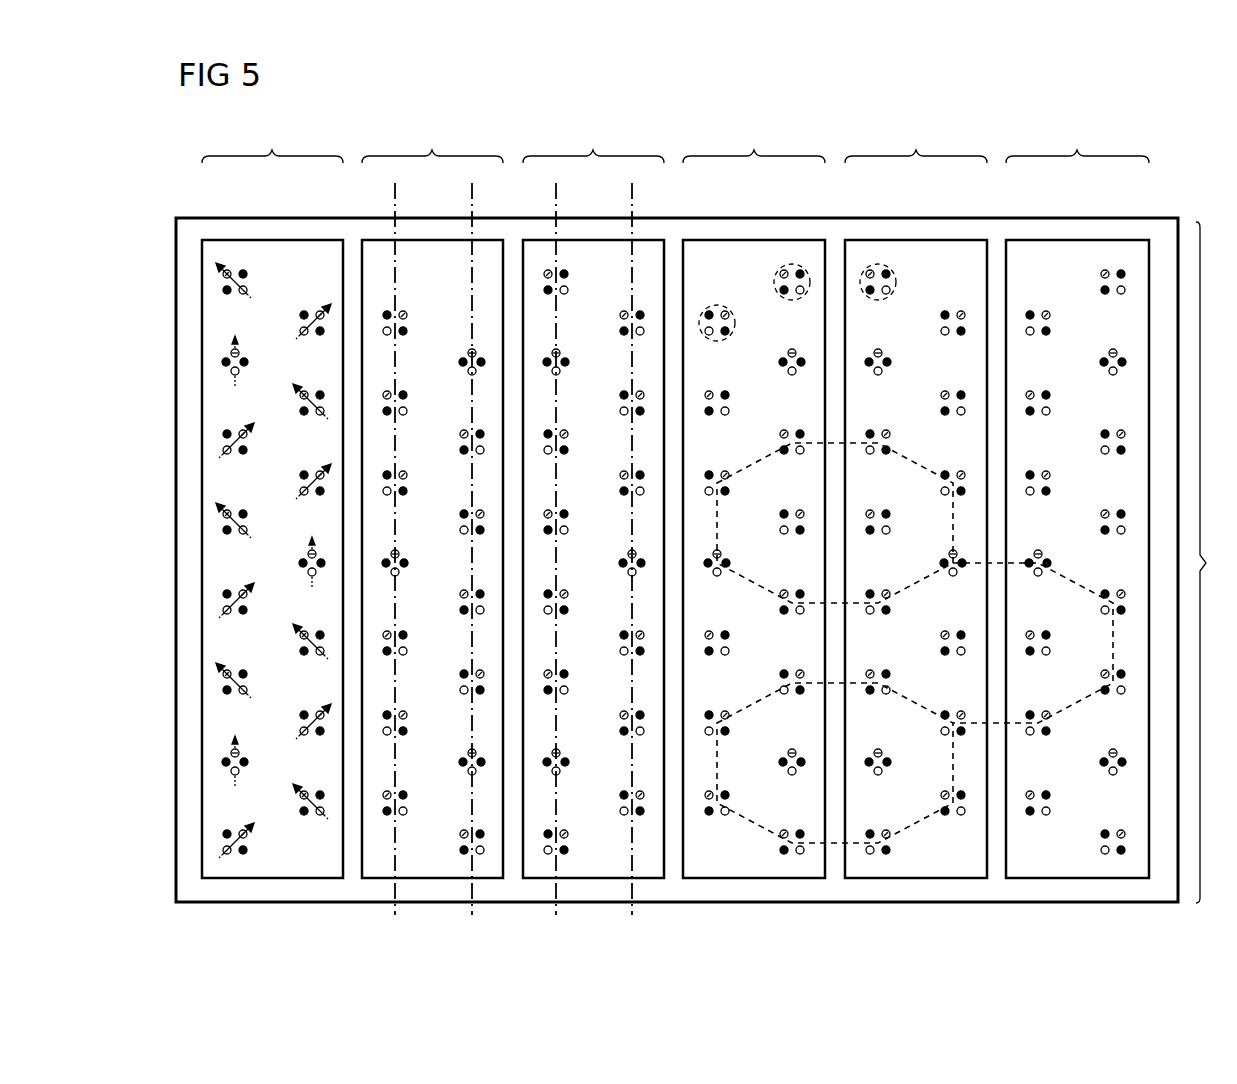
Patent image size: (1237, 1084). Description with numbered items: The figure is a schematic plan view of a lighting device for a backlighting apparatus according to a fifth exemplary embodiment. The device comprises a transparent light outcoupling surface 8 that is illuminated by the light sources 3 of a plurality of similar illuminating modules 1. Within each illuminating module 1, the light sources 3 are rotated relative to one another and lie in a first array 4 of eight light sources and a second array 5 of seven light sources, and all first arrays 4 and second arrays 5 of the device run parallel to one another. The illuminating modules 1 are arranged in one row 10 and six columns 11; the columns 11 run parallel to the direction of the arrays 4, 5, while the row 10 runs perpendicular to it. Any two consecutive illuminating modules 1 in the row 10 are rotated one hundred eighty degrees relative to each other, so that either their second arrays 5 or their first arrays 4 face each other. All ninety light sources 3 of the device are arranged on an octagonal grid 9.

The illuminating module 1 is at (276, 866).
The light source 3 is at (724, 304).
The first array 4 is at (470, 191).
The second array 5 is at (393, 191).
The light outcoupling surface 8 is at (1162, 232).
The octagonal grid 9 is at (756, 830).
The row 10 is at (1216, 562).
The column 11 is at (675, 144).